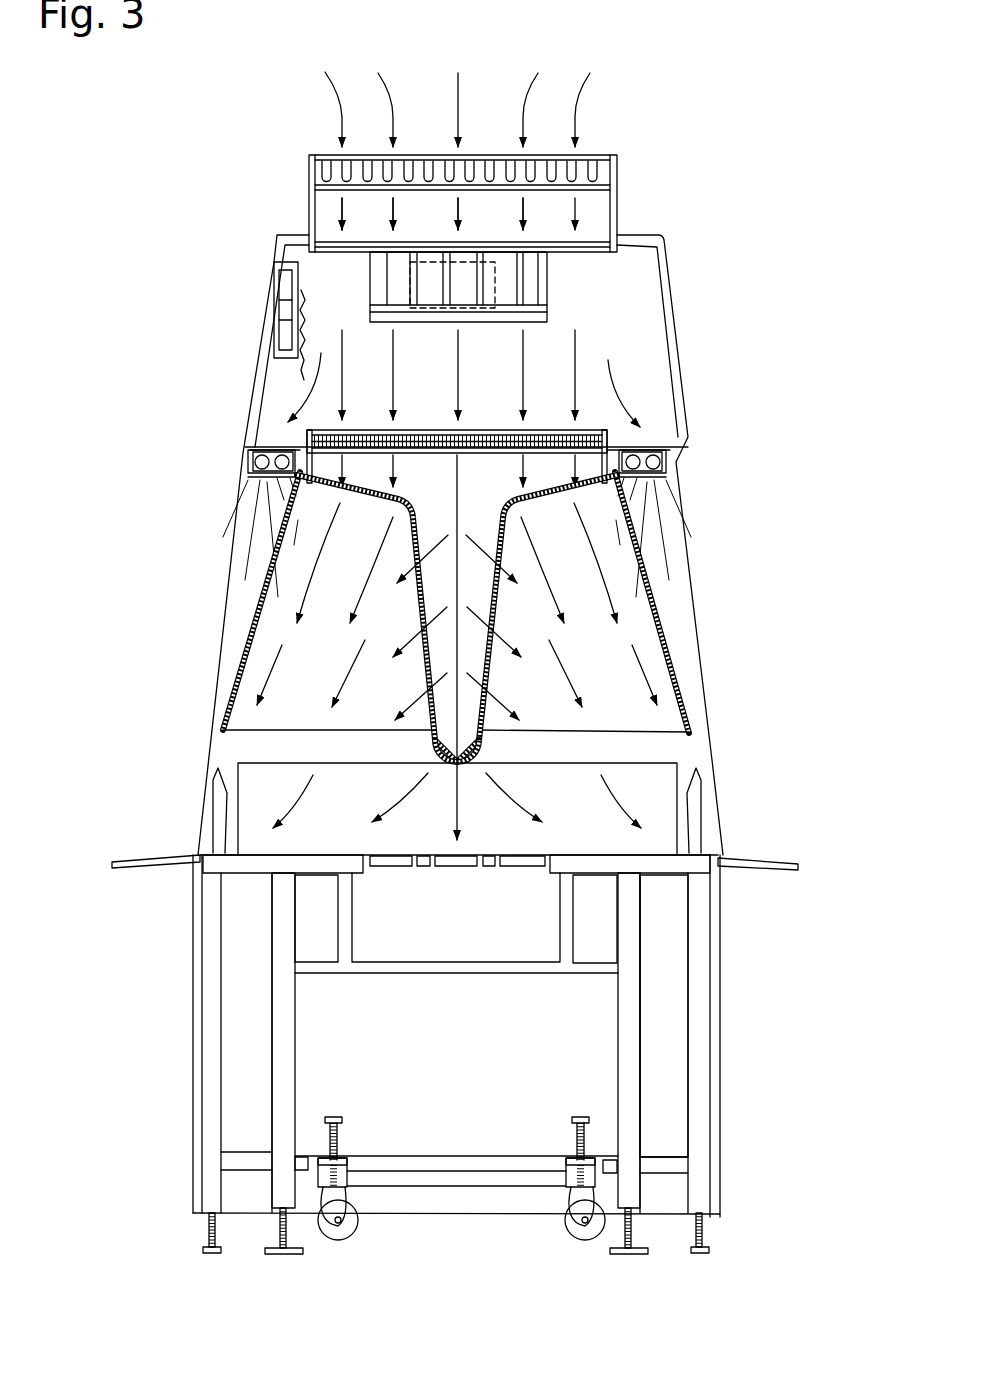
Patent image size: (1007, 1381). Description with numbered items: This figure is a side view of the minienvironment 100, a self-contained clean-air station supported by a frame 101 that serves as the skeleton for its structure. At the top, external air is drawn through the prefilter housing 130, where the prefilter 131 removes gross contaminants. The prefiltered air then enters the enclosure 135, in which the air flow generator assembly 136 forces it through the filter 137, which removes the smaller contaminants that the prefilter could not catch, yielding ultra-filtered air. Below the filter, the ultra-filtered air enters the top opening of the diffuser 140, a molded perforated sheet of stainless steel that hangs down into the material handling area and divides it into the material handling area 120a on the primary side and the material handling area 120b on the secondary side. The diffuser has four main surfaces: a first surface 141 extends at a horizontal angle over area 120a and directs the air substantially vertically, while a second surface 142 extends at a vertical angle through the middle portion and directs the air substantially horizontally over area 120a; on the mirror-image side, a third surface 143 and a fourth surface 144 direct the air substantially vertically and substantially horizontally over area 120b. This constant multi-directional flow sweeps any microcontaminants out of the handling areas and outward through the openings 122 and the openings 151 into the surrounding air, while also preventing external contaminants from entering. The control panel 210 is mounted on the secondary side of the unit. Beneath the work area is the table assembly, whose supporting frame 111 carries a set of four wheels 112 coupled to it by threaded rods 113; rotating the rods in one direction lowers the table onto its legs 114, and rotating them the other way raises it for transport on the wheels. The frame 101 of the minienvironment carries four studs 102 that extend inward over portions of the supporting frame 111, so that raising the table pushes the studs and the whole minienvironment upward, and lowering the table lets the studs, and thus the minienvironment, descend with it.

The minienvironment 100 is at (243, 182).
The frame 101 is at (700, 1140).
The studs 102 is at (300, 1165).
The supporting frame 111 is at (627, 1037).
The wheels 112 is at (348, 1238).
The threaded rods 113 is at (578, 1117).
The legs 114 is at (268, 1252).
The material handling area 120a is at (567, 809).
The material handling area 120b is at (347, 809).
The openings 122 is at (178, 790).
The prefilter housing 130 is at (615, 212).
The prefilter 131 is at (603, 173).
The enclosure 135 is at (678, 342).
The air flow generator assembly 136 is at (548, 291).
The filter 137 is at (607, 438).
The diffuser 140 is at (473, 647).
The first surface 141 is at (560, 492).
The second surface 142 is at (500, 617).
The third surface 143 is at (357, 492).
The fourth surface 144 is at (420, 613).
The openings 151 is at (597, 840).
The control panel 210 is at (283, 272).